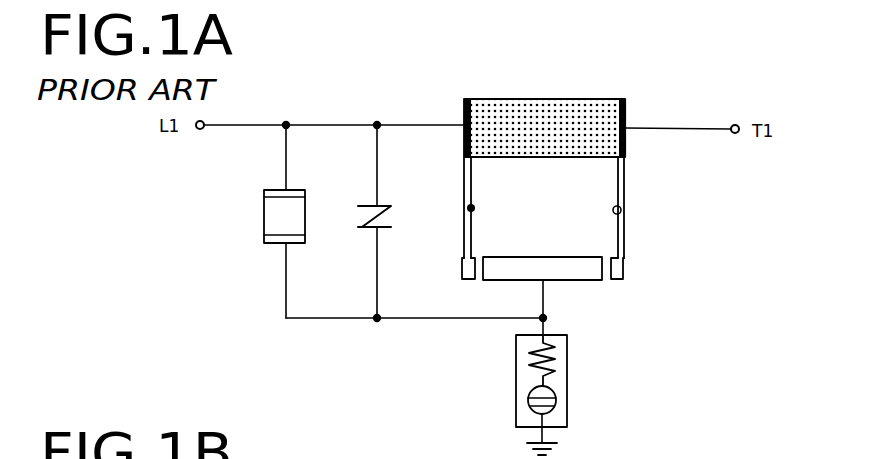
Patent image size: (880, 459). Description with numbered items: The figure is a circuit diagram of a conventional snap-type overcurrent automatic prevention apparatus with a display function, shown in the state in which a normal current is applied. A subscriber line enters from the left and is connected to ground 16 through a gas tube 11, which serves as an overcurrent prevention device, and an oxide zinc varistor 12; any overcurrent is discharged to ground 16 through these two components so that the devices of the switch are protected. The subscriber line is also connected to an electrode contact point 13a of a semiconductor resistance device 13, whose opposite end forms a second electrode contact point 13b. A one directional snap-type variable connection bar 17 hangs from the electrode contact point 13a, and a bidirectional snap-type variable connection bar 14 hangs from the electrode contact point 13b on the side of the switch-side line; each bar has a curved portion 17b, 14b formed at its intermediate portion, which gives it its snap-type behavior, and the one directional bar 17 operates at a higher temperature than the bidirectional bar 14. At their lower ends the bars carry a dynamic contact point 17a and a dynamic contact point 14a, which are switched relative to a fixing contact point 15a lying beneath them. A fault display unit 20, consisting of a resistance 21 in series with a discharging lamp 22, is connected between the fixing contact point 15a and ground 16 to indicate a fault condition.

The gas tube 11 is at (264, 213).
The oxide zinc varistor 12 is at (358, 206).
The semiconductor resistance device 13 is at (516, 104).
The electrode contact point 13a is at (466, 123).
The electrode contact point 13b is at (626, 126).
The bidirectional snap-type variable connection bar 14 is at (625, 178).
The dynamic contact point 14a is at (622, 268).
The curved portion 14b is at (622, 212).
The fixing contact point 15a is at (577, 272).
The ground 16 is at (560, 448).
The one directional snap-type variable connection bar 17 is at (464, 178).
The dynamic contact point 17a is at (462, 268).
The curved portion 17b is at (466, 210).
The fault display unit 20 is at (516, 372).
The resistance 21 is at (555, 357).
The discharging lamp 22 is at (556, 400).